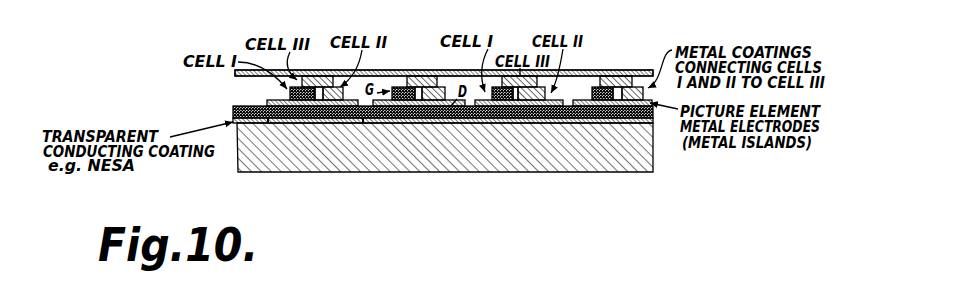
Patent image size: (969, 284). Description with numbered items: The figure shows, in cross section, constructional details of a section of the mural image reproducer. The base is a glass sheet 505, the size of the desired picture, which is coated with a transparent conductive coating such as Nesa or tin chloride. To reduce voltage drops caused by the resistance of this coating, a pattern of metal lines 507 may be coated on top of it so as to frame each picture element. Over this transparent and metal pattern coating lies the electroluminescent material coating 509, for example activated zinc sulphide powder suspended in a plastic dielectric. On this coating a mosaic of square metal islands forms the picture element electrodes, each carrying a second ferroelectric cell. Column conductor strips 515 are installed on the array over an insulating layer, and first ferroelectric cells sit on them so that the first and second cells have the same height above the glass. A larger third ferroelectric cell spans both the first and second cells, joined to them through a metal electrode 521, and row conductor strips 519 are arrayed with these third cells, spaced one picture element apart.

The row conductor strip 519 is at (594, 70).
The column conductor strip 515 is at (290, 97).
The metal electrode 521 is at (470, 74).
The electroluminescent material coating 509 is at (655, 113).
The glass sheet 505 is at (560, 172).
The metal lines 507 is at (361, 121).